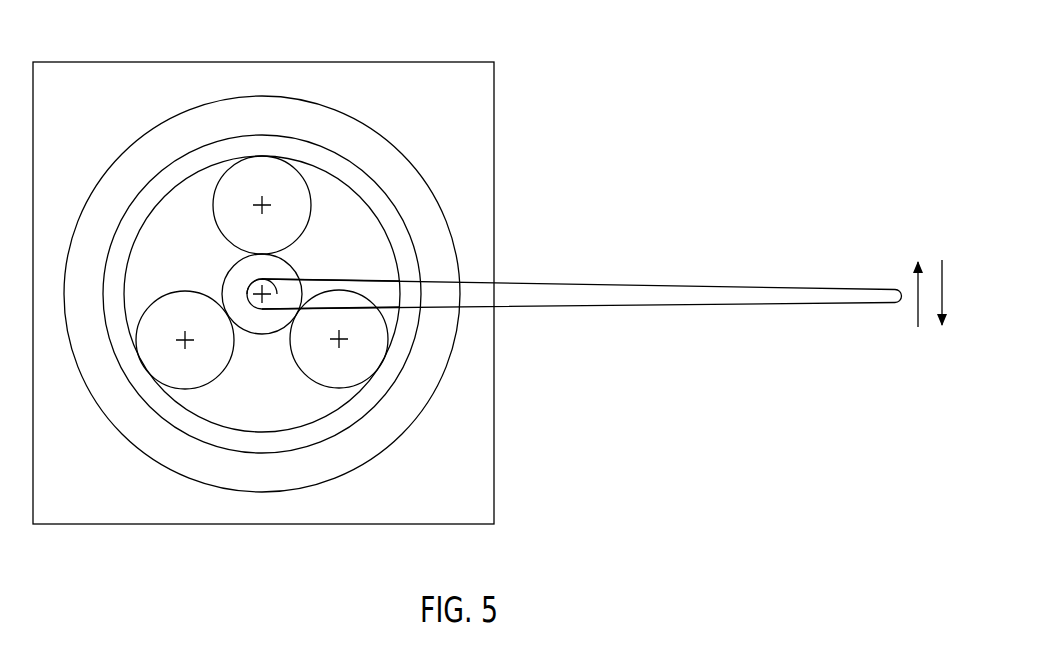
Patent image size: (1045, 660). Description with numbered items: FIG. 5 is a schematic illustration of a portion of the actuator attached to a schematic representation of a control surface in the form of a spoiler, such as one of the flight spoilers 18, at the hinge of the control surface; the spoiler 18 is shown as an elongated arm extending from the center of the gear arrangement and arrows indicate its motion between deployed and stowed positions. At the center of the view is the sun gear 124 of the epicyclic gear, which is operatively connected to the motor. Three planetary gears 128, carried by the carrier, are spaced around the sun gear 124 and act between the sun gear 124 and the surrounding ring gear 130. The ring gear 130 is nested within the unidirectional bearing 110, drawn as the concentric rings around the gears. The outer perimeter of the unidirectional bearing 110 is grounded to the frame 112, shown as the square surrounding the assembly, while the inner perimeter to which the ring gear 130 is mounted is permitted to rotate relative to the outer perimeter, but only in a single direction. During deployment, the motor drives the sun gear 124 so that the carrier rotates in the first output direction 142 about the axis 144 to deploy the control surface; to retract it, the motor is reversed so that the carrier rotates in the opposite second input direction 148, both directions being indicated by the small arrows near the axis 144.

The flight spoilers 18 is at (720, 293).
The unidirectional bearing 110 is at (420, 202).
The frame 112 is at (475, 257).
The sun gear 124 is at (252, 323).
The planetary gears 128 is at (268, 172).
The ring gear 130 is at (407, 252).
The first output direction 142 is at (320, 272).
The axis 144 is at (263, 297).
The second input direction 148 is at (329, 250).